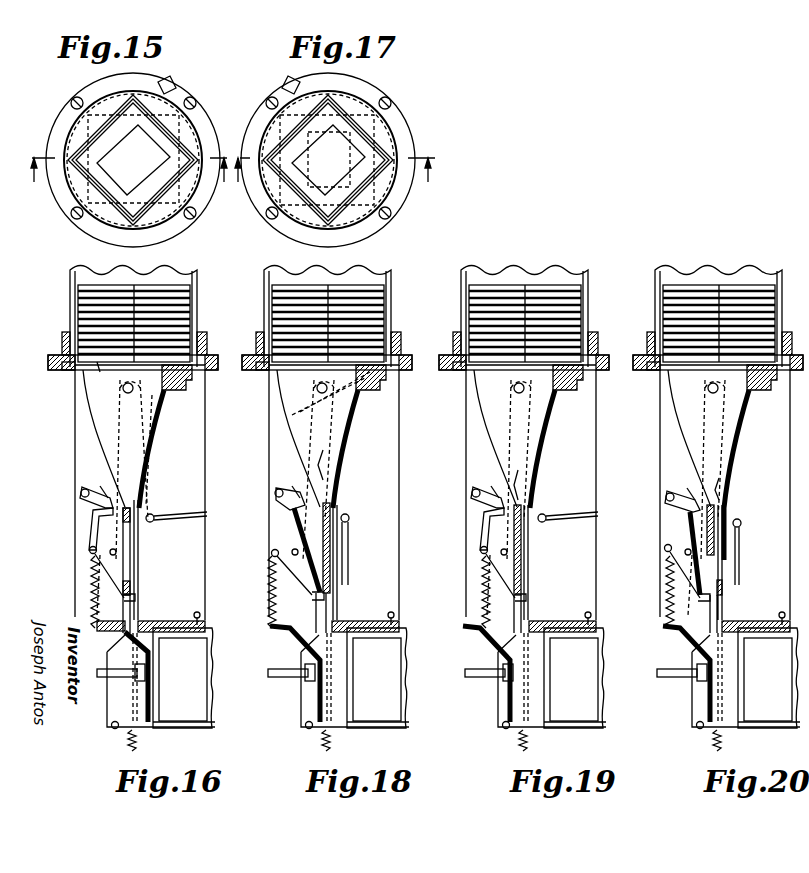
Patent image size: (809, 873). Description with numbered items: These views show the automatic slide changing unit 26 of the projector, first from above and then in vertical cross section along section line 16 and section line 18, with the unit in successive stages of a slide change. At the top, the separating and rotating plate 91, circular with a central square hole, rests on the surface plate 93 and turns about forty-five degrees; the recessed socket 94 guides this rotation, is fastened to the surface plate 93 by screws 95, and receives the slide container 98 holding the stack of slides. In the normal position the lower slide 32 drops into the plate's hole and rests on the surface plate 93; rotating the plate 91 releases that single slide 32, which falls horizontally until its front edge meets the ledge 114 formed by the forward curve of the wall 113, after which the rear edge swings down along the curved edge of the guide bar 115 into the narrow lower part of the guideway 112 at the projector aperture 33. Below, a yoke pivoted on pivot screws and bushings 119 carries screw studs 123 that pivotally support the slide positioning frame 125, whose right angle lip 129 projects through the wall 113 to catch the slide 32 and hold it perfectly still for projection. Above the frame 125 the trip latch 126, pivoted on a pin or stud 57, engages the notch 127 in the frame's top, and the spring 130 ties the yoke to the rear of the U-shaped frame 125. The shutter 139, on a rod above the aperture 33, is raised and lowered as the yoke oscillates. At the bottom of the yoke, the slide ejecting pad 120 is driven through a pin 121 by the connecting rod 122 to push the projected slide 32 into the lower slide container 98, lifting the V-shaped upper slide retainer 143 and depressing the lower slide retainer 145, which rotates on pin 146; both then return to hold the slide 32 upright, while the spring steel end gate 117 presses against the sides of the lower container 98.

In FIG. 15, the screws 95 is at (74, 100).
In FIG. 15, the section line 16— 16 is at (124, 184).
In FIG. 17, the section line 18— 18 is at (332, 160).
In FIG. 16, the slide container 98 is at (70, 300).
In FIG. 18, the slide container 98 is at (264, 300).
In FIG. 19, the slide container 98 is at (461, 300).
In FIG. 20, the slide container 98 is at (655, 300).
In FIG. 16, the socket 94 is at (64, 340).
In FIG. 18, the socket 94 is at (258, 340).
In FIG. 19, the socket 94 is at (455, 340).
In FIG. 20, the socket 94 is at (649, 340).
In FIG. 16, the surface plate 93 is at (50, 368).
In FIG. 18, the surface plate 93 is at (248, 368).
In FIG. 19, the surface plate 93 is at (446, 368).
In FIG. 20, the surface plate 93 is at (640, 370).
In FIG. 16, the separating and rotating plate 91 is at (66, 372).
In FIG. 18, the separating and rotating plate 91 is at (260, 372).
In FIG. 19, the separating and rotating plate 91 is at (457, 372).
In FIG. 20, the separating and rotating plate 91 is at (651, 372).
In FIG. 16, the guide bar 115 is at (76, 430).
In FIG. 18, the guide bar 115 is at (270, 430).
In FIG. 19, the guide bar 115 is at (467, 430).
In FIG. 20, the guide bar 115 is at (661, 440).
In FIG. 16, the automatic slide changing unit 26 is at (82, 455).
In FIG. 16, the slide 32 is at (98, 372).
In FIG. 18, the slide 32 is at (332, 505).
In FIG. 19, the slide 32 is at (530, 540).
In FIG. 20, the slide 32 is at (722, 670).
In FIG. 16, the pivot screws and bushings 119 is at (127, 470).
In FIG. 18, the pivot screws and bushings 119 is at (323, 465).
In FIG. 19, the pivot screws and bushings 119 is at (502, 465).
In FIG. 20, the pivot screws and bushings 119 is at (696, 465).
In FIG. 16, the ledge 114 is at (172, 389).
In FIG. 18, the ledge 114 is at (366, 389).
In FIG. 19, the ledge 114 is at (563, 389).
In FIG. 20, the ledge 114 is at (757, 389).
In FIG. 16, the wall 113 is at (150, 437).
In FIG. 18, the wall 113 is at (344, 437).
In FIG. 19, the wall 113 is at (541, 437).
In FIG. 20, the wall 113 is at (735, 437).
In FIG. 16, the guideway 112 is at (146, 462).
In FIG. 18, the guideway 112 is at (338, 466).
In FIG. 19, the guideway 112 is at (530, 478).
In FIG. 20, the guideway 112 is at (726, 486).
In FIG. 16, the trip latch 126 is at (99, 481).
In FIG. 18, the trip latch 126 is at (287, 481).
In FIG. 19, the trip latch 126 is at (482, 481).
In FIG. 20, the trip latch 126 is at (676, 482).
In FIG. 16, the pin or stud 57 is at (80, 492).
In FIG. 18, the pin or stud 57 is at (274, 492).
In FIG. 19, the pin or stud 57 is at (471, 492).
In FIG. 20, the pin or stud 57 is at (665, 497).
In FIG. 16, the shutter 139 is at (176, 513).
In FIG. 18, the shutter 139 is at (349, 545).
In FIG. 19, the shutter 139 is at (567, 513).
In FIG. 20, the shutter 139 is at (741, 552).
In FIG. 16, the notch 127 is at (90, 520).
In FIG. 18, the notch 127 is at (292, 514).
In FIG. 19, the notch 127 is at (482, 522).
In FIG. 20, the notch 127 is at (695, 553).
In FIG. 16, the slide positioning frame 125 is at (90, 548).
In FIG. 18, the slide positioning frame 125 is at (272, 550).
In FIG. 19, the slide positioning frame 125 is at (481, 548).
In FIG. 20, the slide positioning frame 125 is at (665, 546).
In FIG. 16, the screw studs 123 is at (114, 571).
In FIG. 18, the screw studs 123 is at (292, 553).
In FIG. 19, the screw studs 123 is at (508, 556).
In FIG. 20, the screw studs 123 is at (684, 552).
In FIG. 16, the spring 130 is at (92, 583).
In FIG. 18, the spring 130 is at (272, 585).
In FIG. 19, the spring 130 is at (484, 590).
In FIG. 20, the spring 130 is at (668, 590).
In FIG. 16, the projector aperture 33 is at (132, 572).
In FIG. 16, the right angle lip 129 is at (120, 606).
In FIG. 18, the right angle lip 129 is at (326, 598).
In FIG. 19, the right angle lip 129 is at (528, 602).
In FIG. 20, the right angle lip 129 is at (712, 602).
In FIG. 16, the upper slide retainer 143 is at (160, 620).
In FIG. 18, the upper slide retainer 143 is at (356, 620).
In FIG. 19, the upper slide retainer 143 is at (556, 620).
In FIG. 20, the upper slide retainer 143 is at (742, 628).
In FIG. 16, the end gate 117 is at (164, 648).
In FIG. 18, the end gate 117 is at (356, 648).
In FIG. 19, the end gate 117 is at (552, 648).
In FIG. 20, the end gate 117 is at (746, 648).
In FIG. 16, the slide ejecting pad 120 is at (150, 660).
In FIG. 18, the slide ejecting pad 120 is at (310, 650).
In FIG. 19, the slide ejecting pad 120 is at (505, 650).
In FIG. 20, the slide ejecting pad 120 is at (704, 650).
In FIG. 16, the pin 121 is at (146, 678).
In FIG. 18, the pin 121 is at (318, 674).
In FIG. 19, the pin 121 is at (516, 674).
In FIG. 20, the pin 121 is at (710, 676).
In FIG. 18, the connecting rod 122 is at (276, 678).
In FIG. 19, the connecting rod 122 is at (474, 678).
In FIG. 20, the connecting rod 122 is at (666, 678).
In FIG. 16, the pin 146 is at (115, 730).
In FIG. 18, the pin 146 is at (309, 730).
In FIG. 19, the pin 146 is at (506, 730).
In FIG. 20, the pin 146 is at (700, 730).
In FIG. 16, the lower slide retainer 145 is at (140, 735).
In FIG. 18, the lower slide retainer 145 is at (336, 735).
In FIG. 19, the lower slide retainer 145 is at (533, 735).
In FIG. 20, the lower slide retainer 145 is at (727, 735).